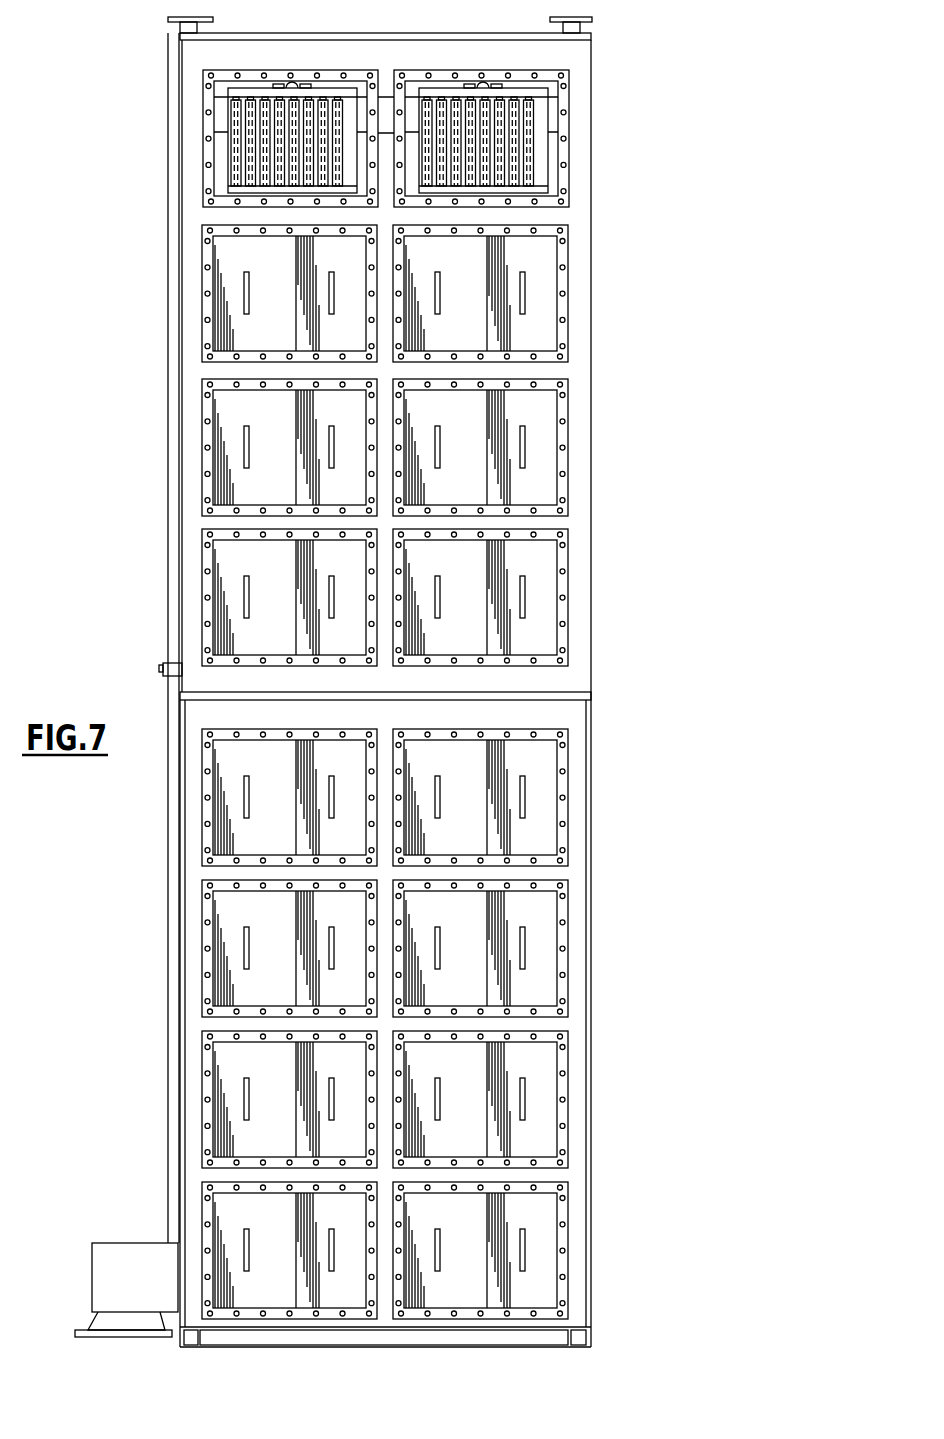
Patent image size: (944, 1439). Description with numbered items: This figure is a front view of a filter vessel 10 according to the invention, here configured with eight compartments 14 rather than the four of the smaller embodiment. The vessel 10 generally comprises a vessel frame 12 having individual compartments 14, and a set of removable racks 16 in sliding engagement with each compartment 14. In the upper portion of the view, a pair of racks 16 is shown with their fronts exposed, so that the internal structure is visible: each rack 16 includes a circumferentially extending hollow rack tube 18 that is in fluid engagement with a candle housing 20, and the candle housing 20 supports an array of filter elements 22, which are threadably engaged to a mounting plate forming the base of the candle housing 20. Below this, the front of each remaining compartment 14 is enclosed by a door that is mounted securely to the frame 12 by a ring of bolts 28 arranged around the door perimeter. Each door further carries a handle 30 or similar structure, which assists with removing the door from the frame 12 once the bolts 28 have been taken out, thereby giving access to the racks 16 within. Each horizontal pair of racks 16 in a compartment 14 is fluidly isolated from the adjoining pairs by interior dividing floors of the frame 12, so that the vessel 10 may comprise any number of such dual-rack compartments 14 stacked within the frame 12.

The filter vessel 10 is at (684, 86).
The vessel frame 12 is at (190, 137).
The compartment 14 is at (382, 62).
The removable rack 16 is at (560, 149).
The rack tube 18 is at (553, 106).
The candle housing 20 is at (443, 88).
The filter elements 22 is at (528, 178).
The bolts 28 is at (568, 357).
The handle 30 is at (528, 297).